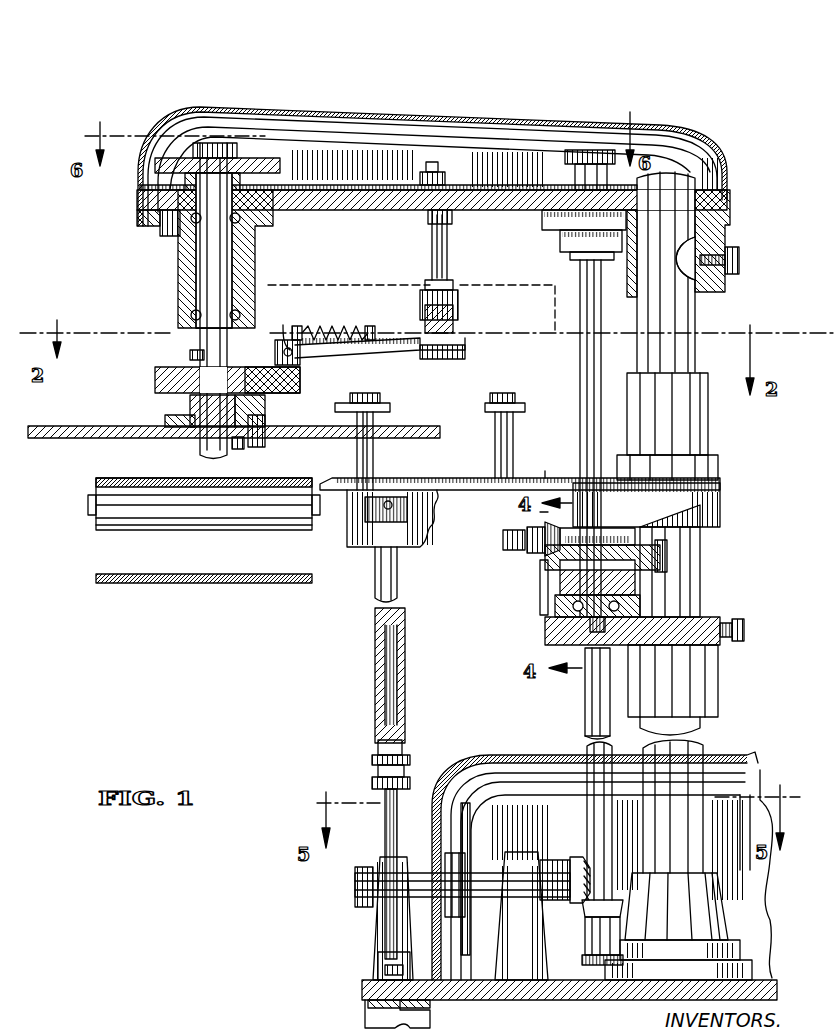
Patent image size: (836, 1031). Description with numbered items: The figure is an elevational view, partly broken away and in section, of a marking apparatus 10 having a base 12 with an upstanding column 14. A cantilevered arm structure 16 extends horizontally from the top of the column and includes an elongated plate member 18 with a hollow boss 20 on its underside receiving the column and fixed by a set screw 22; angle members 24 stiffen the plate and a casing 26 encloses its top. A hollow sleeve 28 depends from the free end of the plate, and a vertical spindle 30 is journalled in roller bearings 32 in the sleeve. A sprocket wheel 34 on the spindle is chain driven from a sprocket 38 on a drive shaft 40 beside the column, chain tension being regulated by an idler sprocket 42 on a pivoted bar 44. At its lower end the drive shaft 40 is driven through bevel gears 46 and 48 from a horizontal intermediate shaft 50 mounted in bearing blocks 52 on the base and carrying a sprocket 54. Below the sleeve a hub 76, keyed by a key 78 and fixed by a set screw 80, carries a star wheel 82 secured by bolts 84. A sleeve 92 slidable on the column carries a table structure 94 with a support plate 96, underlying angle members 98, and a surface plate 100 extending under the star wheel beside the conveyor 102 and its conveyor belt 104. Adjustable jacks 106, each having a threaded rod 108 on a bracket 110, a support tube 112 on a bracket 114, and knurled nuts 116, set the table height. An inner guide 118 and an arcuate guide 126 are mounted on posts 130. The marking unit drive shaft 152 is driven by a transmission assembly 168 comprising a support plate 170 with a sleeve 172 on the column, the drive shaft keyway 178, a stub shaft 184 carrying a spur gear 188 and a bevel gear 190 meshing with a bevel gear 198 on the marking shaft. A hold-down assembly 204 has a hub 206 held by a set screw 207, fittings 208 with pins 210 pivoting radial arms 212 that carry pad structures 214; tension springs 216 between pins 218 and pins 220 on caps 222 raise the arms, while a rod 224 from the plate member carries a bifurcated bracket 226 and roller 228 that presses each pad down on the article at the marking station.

The marking apparatus 10 is at (550, 57).
The base 12 is at (560, 989).
The column 14 is at (700, 544).
The cantilevered arm structure 16 is at (432, 153).
The plate member 18 is at (468, 212).
The hollow boss 20 is at (707, 249).
The set screw 22 is at (740, 260).
The angle members 24 is at (676, 152).
The casing 26 is at (342, 127).
The hollow sleeve 28 is at (180, 270).
The vertical spindle 30 is at (205, 234).
The roller bearings 32 is at (255, 210).
The sprocket wheel 34 is at (268, 158).
The sprocket 38 is at (556, 158).
The drive shaft 40 is at (585, 263).
The idler sprocket 42 is at (416, 135).
The bar 44 is at (418, 172).
The bevel gear 46 is at (632, 896).
The bevel gear 48 is at (580, 857).
The intermediate shaft 50 is at (487, 872).
The bearing blocks 52 is at (380, 929).
The sprocket 54 is at (470, 820).
The hub 76 is at (252, 410).
The key 78 is at (250, 442).
The set screw 80 is at (190, 403).
The star wheel 82 is at (88, 434).
The bolts 84 is at (262, 440).
The sleeve 92 is at (700, 427).
The table structure 94 is at (540, 463).
The support plate 96 is at (548, 478).
The angle members 98 is at (710, 514).
The surface plate 100 is at (412, 480).
The conveyor 102 is at (96, 470).
The conveyor belt 104 is at (132, 478).
The adjustable jacks 106 is at (442, 659).
The threaded rod 108 is at (388, 833).
The bracket 110 is at (384, 958).
The support tube 112 is at (375, 581).
The bracket 114 is at (363, 543).
The knurled nuts 116 is at (372, 760).
The inner guide 118 is at (372, 406).
The guide 126 is at (505, 404).
The posts 130 is at (514, 426).
The drive shaft 152 is at (512, 532).
The transmission assembly 168 is at (526, 654).
The support plate 170 is at (718, 618).
The sleeve 172 is at (705, 691).
The keyway 178 is at (592, 713).
The stub shaft 184 is at (572, 583).
The spur gear 188 is at (556, 603).
The bevel gear 190 is at (548, 557).
The bevel gear 198 is at (540, 515).
The hold-down assembly 204 is at (411, 294).
The hub 206 is at (158, 381).
The set screw 207 is at (198, 356).
The fitting 208 is at (300, 381).
The pin 210 is at (312, 364).
The radial arm 212 is at (345, 356).
The pad structure 214 is at (462, 356).
The tension spring 216 is at (326, 334).
The pin 218 is at (368, 334).
The pin 220 is at (292, 332).
The cap 222 is at (283, 325).
The rod 224 is at (440, 264).
The bifurcated bracket 226 is at (458, 299).
The roller 228 is at (458, 318).